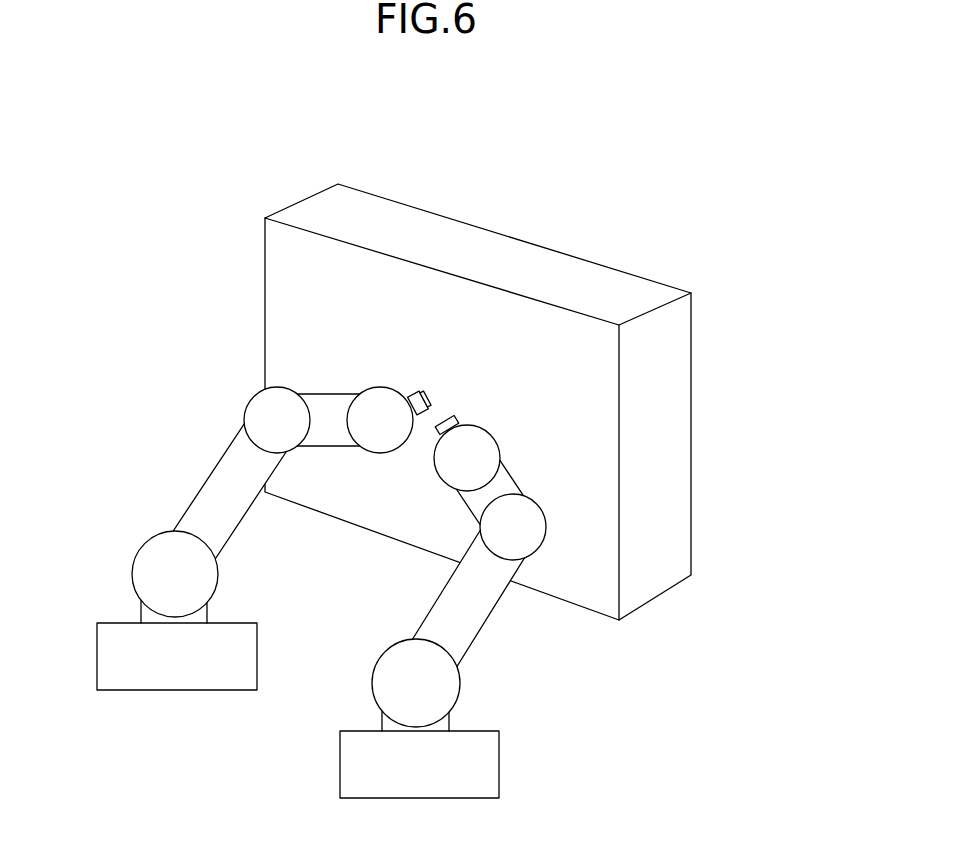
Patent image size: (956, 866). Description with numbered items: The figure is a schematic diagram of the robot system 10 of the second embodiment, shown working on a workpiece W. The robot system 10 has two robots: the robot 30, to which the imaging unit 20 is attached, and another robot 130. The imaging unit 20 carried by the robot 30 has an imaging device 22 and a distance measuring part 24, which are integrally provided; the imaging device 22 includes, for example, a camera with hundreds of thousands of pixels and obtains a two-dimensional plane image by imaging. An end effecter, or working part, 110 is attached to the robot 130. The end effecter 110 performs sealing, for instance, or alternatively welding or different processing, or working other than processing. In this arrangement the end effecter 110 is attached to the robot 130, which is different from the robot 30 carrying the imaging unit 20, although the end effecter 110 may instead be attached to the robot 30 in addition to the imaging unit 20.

The robot system 10 is at (444, 429).
The workpiece W is at (682, 378).
The robot 30 is at (306, 506).
The imaging unit 20 is at (431, 387).
The imaging device 22 is at (420, 391).
The distance measuring part 24 is at (429, 407).
The robot 130 is at (477, 595).
The end effecter 110 is at (457, 422).